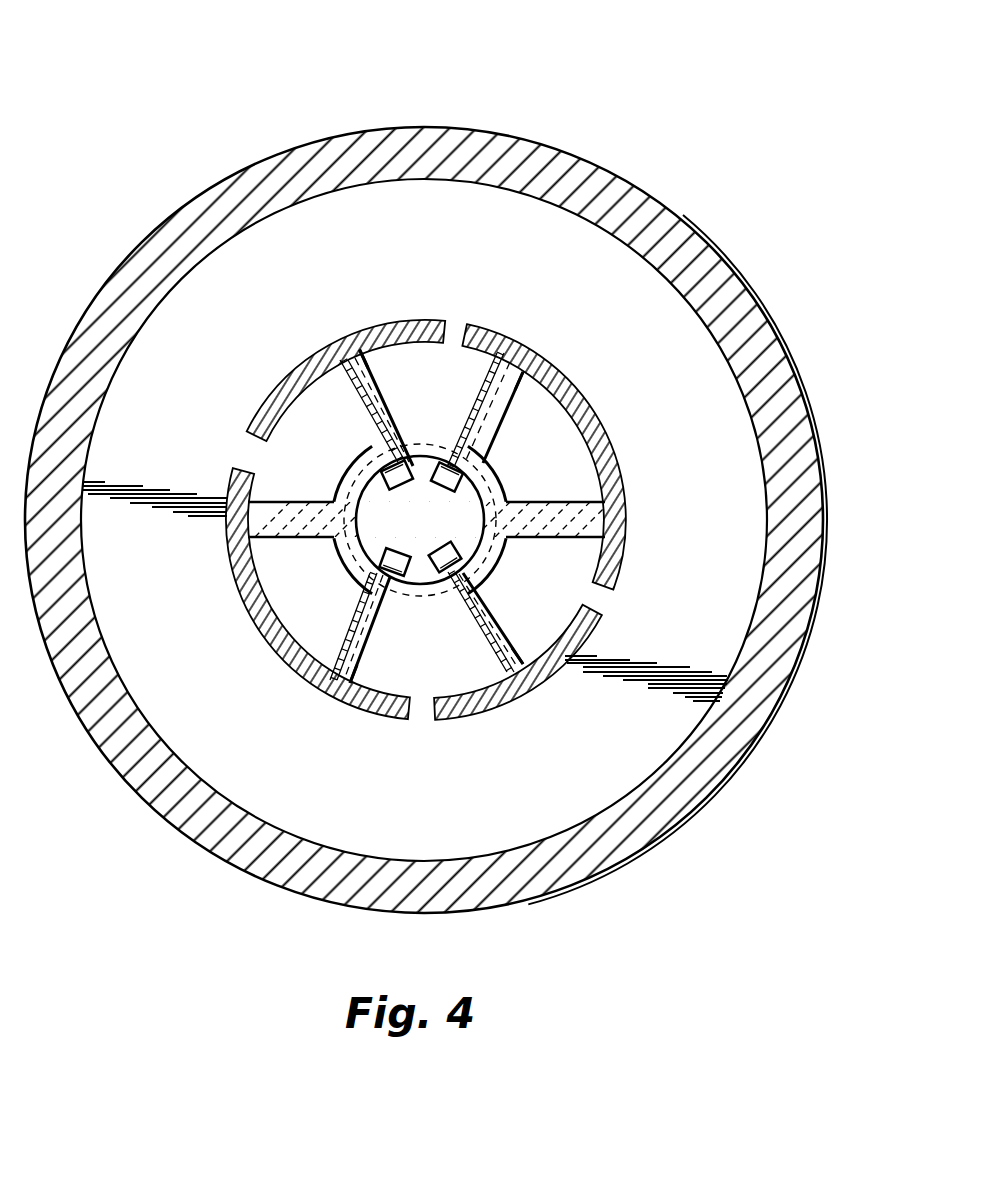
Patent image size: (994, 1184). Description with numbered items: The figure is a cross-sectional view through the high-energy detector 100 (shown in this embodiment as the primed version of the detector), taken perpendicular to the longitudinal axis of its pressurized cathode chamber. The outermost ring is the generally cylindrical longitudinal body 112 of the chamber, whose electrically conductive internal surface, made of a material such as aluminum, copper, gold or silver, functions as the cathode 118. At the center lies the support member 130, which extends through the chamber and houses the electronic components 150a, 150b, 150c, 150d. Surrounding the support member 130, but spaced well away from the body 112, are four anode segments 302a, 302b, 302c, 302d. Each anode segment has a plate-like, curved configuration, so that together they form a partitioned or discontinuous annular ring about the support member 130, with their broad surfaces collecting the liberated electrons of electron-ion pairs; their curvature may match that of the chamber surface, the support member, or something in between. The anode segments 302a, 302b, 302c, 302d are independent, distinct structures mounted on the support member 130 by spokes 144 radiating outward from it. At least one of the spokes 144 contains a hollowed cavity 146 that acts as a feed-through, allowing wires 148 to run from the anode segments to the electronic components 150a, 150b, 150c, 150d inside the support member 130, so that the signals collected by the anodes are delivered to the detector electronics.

The high-energy detector 100 is at (276, 122).
The longitudinal body 112 is at (782, 348).
The cathode 118 is at (697, 302).
The support member 130 is at (494, 481).
The spokes 144 is at (480, 392).
The hollowed cavity 146 is at (325, 392).
The wires 148 is at (350, 356).
The electronic component 150a is at (462, 548).
The electronic component 150b is at (445, 463).
The electronic component 150c is at (385, 555).
The electronic component 150d is at (385, 478).
The anode segment 302a is at (483, 712).
The anode segment 302b is at (497, 325).
The anode segment 302c is at (278, 657).
The anode segment 302d is at (244, 430).